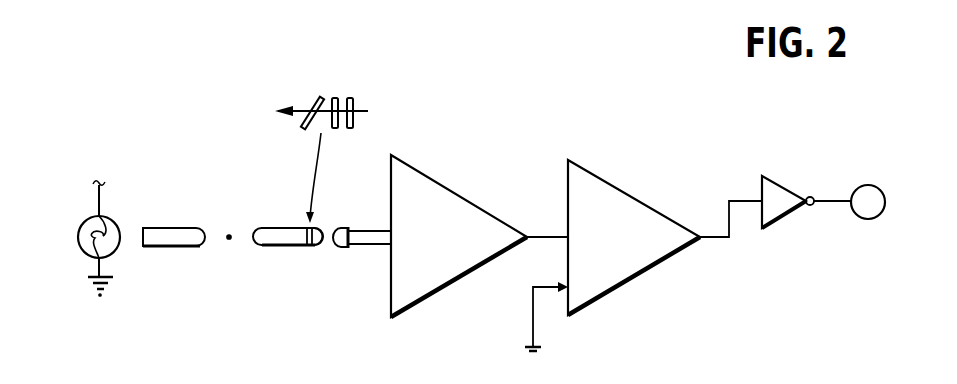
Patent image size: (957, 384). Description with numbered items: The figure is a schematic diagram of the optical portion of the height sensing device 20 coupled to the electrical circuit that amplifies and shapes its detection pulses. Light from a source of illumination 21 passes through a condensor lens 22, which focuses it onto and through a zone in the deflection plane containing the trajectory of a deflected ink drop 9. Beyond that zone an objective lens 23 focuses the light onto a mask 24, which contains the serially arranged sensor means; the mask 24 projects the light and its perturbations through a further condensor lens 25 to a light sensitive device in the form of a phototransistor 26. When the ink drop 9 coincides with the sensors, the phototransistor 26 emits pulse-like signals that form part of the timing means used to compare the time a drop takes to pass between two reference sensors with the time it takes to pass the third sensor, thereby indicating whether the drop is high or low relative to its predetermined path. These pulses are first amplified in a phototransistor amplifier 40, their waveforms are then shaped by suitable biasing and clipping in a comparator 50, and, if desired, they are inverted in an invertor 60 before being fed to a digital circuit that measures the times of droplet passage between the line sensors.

The source of illumination 21 is at (88, 226).
The height sensing device 20 is at (189, 200).
The ink drop 9 is at (231, 236).
The condensor lens 22 is at (186, 248).
The objective lens 23 is at (283, 247).
The mask 24 is at (309, 247).
The condensor lens 25 is at (319, 230).
The phototransistor 26 is at (348, 249).
The phototransistor amplifier 40 is at (437, 190).
The comparator 50 is at (627, 198).
The invertor 60 is at (787, 195).